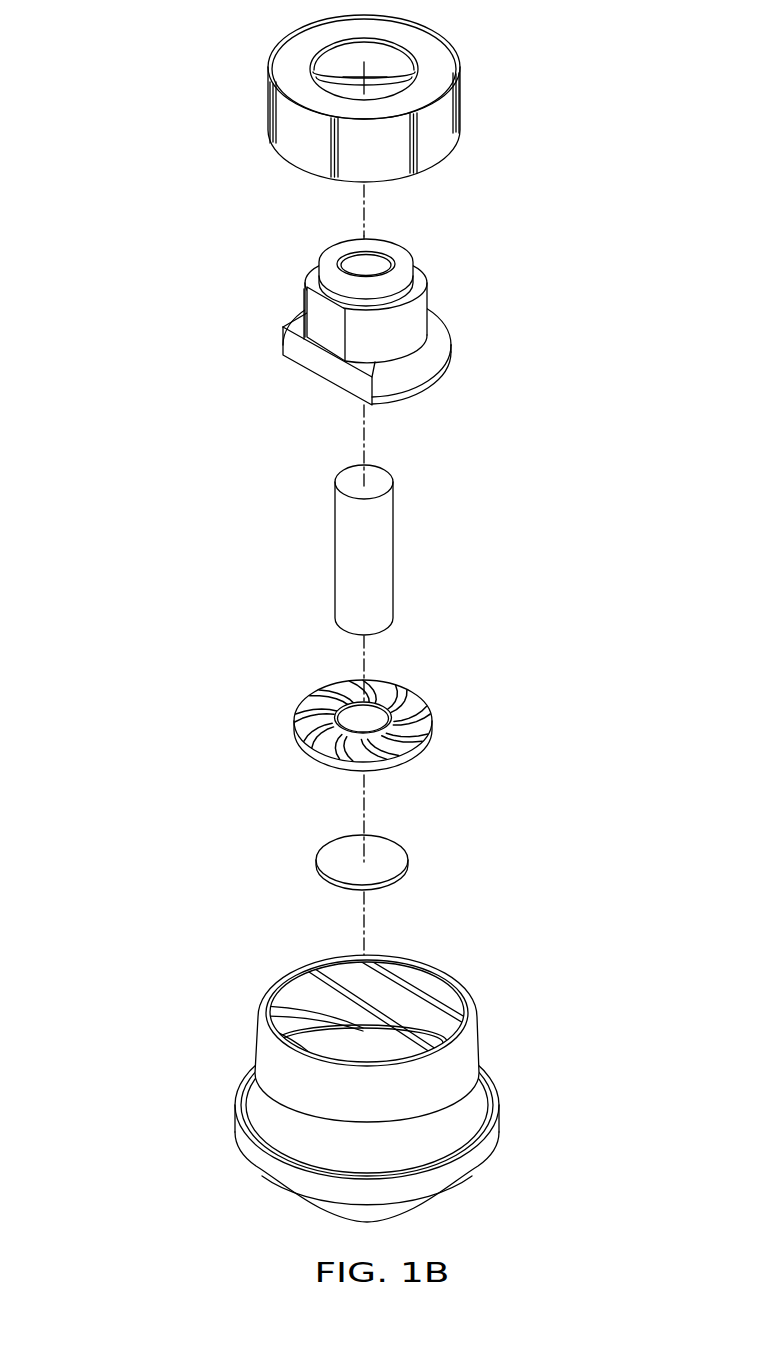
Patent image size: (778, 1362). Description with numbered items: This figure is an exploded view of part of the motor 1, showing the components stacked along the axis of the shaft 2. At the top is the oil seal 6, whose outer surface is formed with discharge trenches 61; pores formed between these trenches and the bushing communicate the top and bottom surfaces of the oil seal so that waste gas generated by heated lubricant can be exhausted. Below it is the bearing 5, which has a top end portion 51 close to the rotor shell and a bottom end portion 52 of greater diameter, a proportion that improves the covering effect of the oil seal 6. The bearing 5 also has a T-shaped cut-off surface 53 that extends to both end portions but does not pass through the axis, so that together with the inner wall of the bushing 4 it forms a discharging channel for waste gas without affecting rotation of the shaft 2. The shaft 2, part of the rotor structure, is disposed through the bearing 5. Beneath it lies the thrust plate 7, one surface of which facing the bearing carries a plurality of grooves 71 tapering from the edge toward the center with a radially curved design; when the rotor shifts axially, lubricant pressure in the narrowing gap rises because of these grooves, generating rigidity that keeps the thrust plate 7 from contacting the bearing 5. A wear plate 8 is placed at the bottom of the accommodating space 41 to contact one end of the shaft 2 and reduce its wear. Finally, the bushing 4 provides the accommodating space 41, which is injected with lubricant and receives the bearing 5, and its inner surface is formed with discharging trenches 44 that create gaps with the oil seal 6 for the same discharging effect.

The motor 1 is at (132, 72).
The shaft 2 is at (385, 558).
The bushing 4 is at (399, 1077).
The accommodating space 41 is at (427, 983).
The discharging trenches 44 is at (297, 1003).
The bearing 5 is at (393, 322).
The top end portion 51 is at (415, 310).
The bottom end portion 52 is at (443, 357).
The T-shaped cut-off surface 53 is at (330, 365).
The oil seal 6 is at (354, 98).
The discharge trenches 61 is at (272, 133).
The thrust plate 7 is at (389, 718).
The grooves 71 is at (423, 708).
The wear plate 8 is at (387, 858).